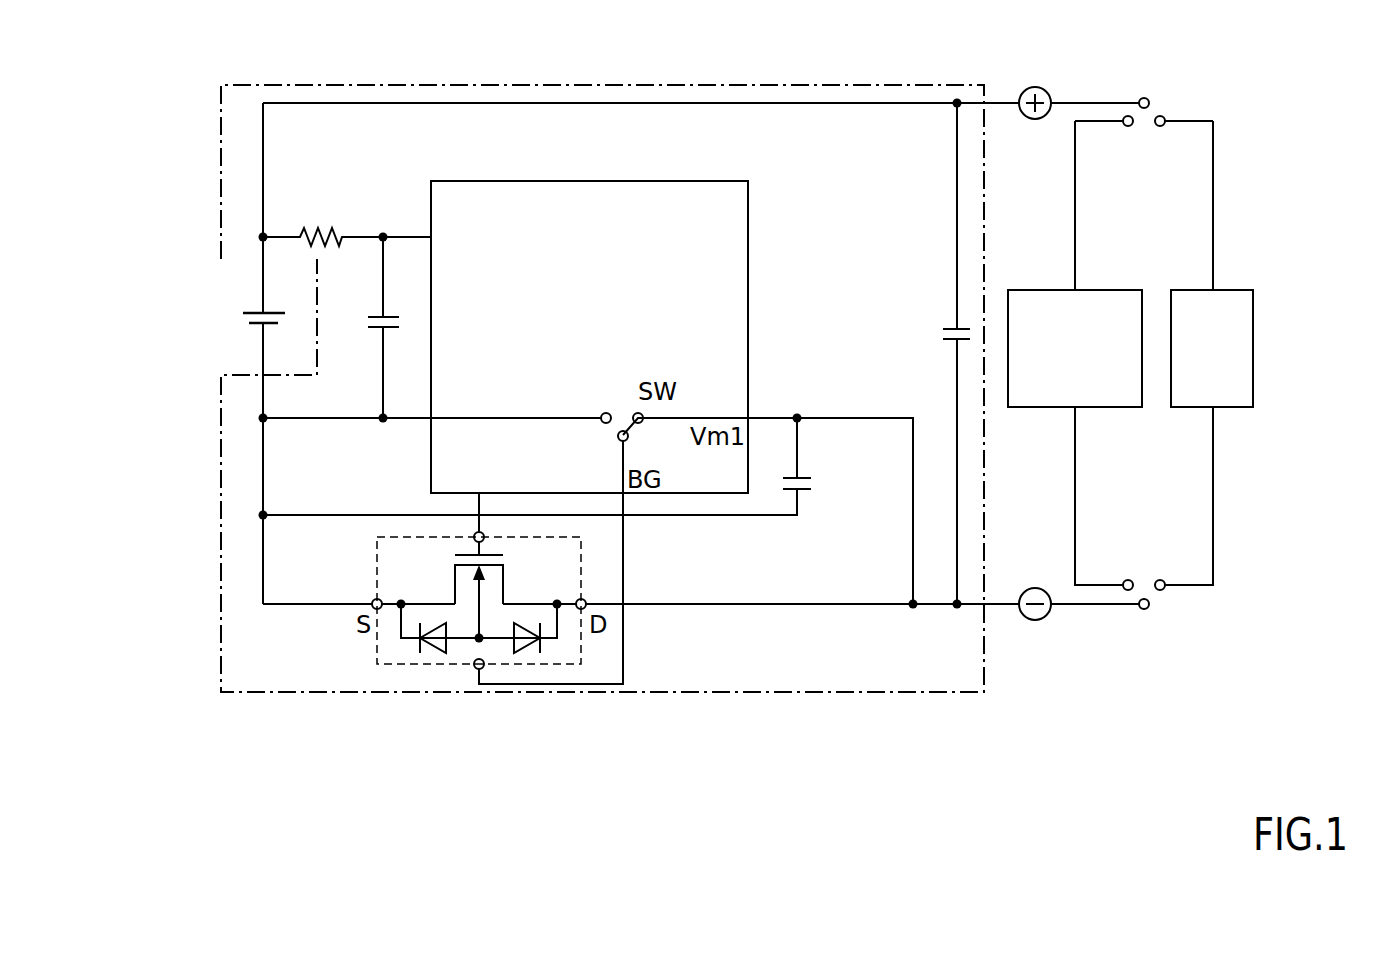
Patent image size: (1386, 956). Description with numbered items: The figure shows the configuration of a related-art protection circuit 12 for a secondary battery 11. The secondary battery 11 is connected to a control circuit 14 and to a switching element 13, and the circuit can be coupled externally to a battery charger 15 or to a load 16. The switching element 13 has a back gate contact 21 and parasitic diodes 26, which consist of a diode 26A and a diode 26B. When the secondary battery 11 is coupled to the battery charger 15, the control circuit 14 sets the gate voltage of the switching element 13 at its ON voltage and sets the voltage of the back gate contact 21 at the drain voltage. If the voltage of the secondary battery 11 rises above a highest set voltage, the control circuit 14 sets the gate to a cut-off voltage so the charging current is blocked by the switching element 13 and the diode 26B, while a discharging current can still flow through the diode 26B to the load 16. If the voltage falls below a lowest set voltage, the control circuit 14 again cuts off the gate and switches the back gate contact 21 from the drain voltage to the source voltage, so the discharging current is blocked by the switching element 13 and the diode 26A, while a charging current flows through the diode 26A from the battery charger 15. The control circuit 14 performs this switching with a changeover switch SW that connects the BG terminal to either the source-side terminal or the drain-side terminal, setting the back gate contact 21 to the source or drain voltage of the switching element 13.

The secondary battery 11 is at (253, 313).
The protection circuit 12 is at (607, 85).
The switching element 13 is at (400, 668).
The control circuit 14 is at (748, 250).
The battery charger 15 is at (1098, 291).
The load 16 is at (1225, 291).
The back gate contact 21 is at (484, 657).
The parasitic diodes 26 is at (479, 703).
The diode 26A is at (518, 680).
The diode 26B is at (430, 651).